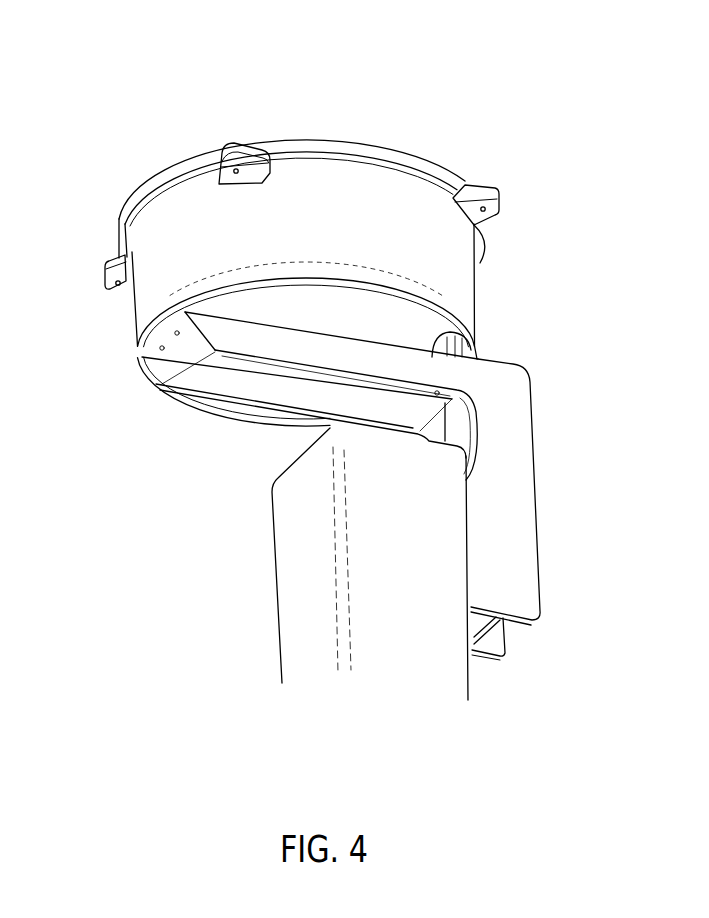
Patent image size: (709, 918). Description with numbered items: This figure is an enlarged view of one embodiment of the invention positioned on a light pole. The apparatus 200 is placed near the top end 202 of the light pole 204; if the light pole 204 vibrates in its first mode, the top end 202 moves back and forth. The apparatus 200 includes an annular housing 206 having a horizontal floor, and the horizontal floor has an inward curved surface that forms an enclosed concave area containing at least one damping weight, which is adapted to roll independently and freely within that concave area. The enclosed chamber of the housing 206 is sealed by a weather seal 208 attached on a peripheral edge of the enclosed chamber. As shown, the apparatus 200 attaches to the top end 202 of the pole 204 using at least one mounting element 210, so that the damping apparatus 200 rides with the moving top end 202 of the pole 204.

The apparatus 200 is at (255, 112).
The top end 202 is at (272, 517).
The light pole 204 is at (272, 588).
The housing 206 is at (477, 274).
The weather seal 208 is at (440, 163).
The mounting element 210 is at (540, 543).